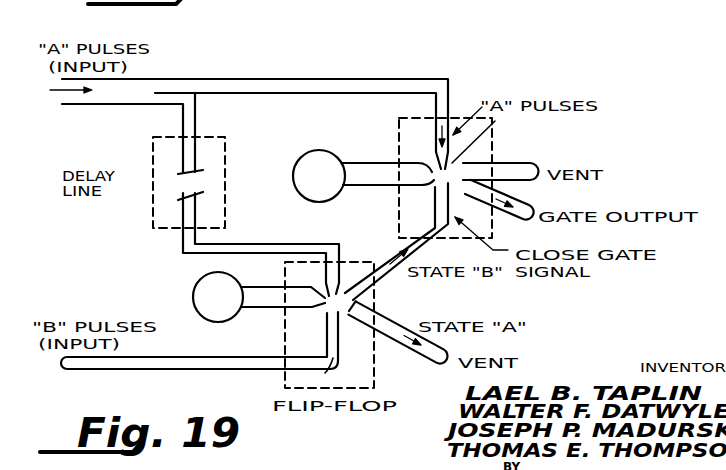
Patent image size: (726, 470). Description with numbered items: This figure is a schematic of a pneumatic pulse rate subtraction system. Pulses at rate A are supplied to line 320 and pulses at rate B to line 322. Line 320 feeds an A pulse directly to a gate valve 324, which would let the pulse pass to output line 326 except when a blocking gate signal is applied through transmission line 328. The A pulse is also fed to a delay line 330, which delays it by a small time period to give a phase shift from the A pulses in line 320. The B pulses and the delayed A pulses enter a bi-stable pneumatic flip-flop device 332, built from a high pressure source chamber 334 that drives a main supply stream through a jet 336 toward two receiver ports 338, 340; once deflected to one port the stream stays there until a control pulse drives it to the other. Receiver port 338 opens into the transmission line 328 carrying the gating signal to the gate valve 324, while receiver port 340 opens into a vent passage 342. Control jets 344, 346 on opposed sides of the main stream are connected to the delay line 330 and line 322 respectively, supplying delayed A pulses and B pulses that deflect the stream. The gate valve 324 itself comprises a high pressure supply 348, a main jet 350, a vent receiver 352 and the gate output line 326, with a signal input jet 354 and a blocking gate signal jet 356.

The line 320 is at (253, 80).
The line 322 is at (148, 366).
The gate valve 324 is at (493, 154).
The output line 326 is at (525, 200).
The transmission line 328 is at (432, 240).
The delay line 330 is at (196, 115).
The bi-stable pneumatic flip-flop device 332 is at (282, 377).
The high pressure source chamber 334 is at (196, 287).
The jet 336 is at (321, 318).
The receiver port 338 is at (360, 290).
The receiver port 340 is at (350, 310).
The vent passage 342 is at (405, 348).
The control jet 344 is at (340, 283).
The control jet 346 is at (343, 373).
The high pressure supply 348 is at (328, 150).
The main jet 350 is at (402, 162).
The vent receiver 352 is at (523, 161).
The signal input jet 354 is at (493, 141).
The blocking gate signal jet 356 is at (432, 186).